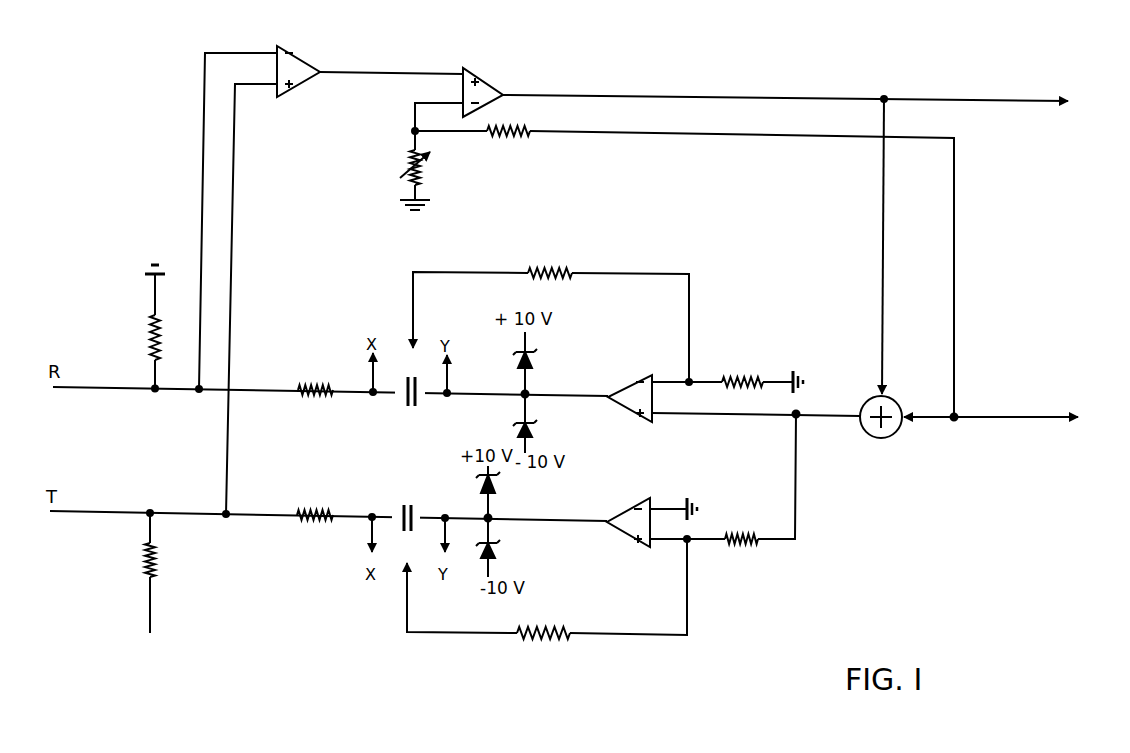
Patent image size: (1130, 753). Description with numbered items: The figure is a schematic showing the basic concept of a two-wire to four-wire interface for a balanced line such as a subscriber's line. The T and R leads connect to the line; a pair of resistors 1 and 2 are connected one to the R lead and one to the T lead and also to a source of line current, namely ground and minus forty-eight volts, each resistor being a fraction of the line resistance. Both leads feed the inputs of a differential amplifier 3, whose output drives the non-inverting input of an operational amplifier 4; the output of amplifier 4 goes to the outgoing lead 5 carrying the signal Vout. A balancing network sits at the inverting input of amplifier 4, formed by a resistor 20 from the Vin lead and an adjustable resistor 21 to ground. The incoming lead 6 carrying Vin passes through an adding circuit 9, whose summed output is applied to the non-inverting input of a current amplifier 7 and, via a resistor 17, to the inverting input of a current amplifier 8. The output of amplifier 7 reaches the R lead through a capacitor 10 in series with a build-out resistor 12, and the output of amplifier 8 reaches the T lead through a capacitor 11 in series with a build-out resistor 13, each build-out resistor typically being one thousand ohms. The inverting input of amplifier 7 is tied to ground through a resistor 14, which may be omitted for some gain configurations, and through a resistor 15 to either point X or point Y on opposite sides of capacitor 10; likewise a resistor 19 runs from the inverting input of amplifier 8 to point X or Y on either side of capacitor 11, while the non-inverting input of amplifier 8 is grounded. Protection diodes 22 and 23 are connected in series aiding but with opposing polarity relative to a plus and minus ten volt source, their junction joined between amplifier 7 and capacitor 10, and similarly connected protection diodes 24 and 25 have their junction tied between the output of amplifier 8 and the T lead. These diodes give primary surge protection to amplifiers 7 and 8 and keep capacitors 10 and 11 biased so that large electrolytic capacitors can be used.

The resistor 1 is at (150, 340).
The resistor 2 is at (145, 577).
The differential amplifier 3 is at (300, 68).
The operational amplifier 4 is at (490, 86).
The outgoing lead 5 is at (993, 101).
The incoming lead 6 is at (1013, 416).
The current amplifier 7 is at (645, 423).
The current amplifier 8 is at (638, 500).
The adding circuit 9 is at (893, 397).
The capacitor 10 is at (417, 400).
The capacitor 11 is at (413, 512).
The build-out resistor 12 is at (308, 385).
The build-out resistor 13 is at (321, 512).
The resistor 14 is at (729, 378).
The resistor 15 is at (590, 262).
The resistor 17 is at (757, 545).
The resistor 19 is at (540, 640).
The resistor 20 is at (525, 144).
The adjustable resistor 21 is at (404, 172).
The protection diode 22 is at (534, 352).
The protection diode 23 is at (534, 431).
The protection diode 24 is at (495, 490).
The protection diode 25 is at (497, 554).